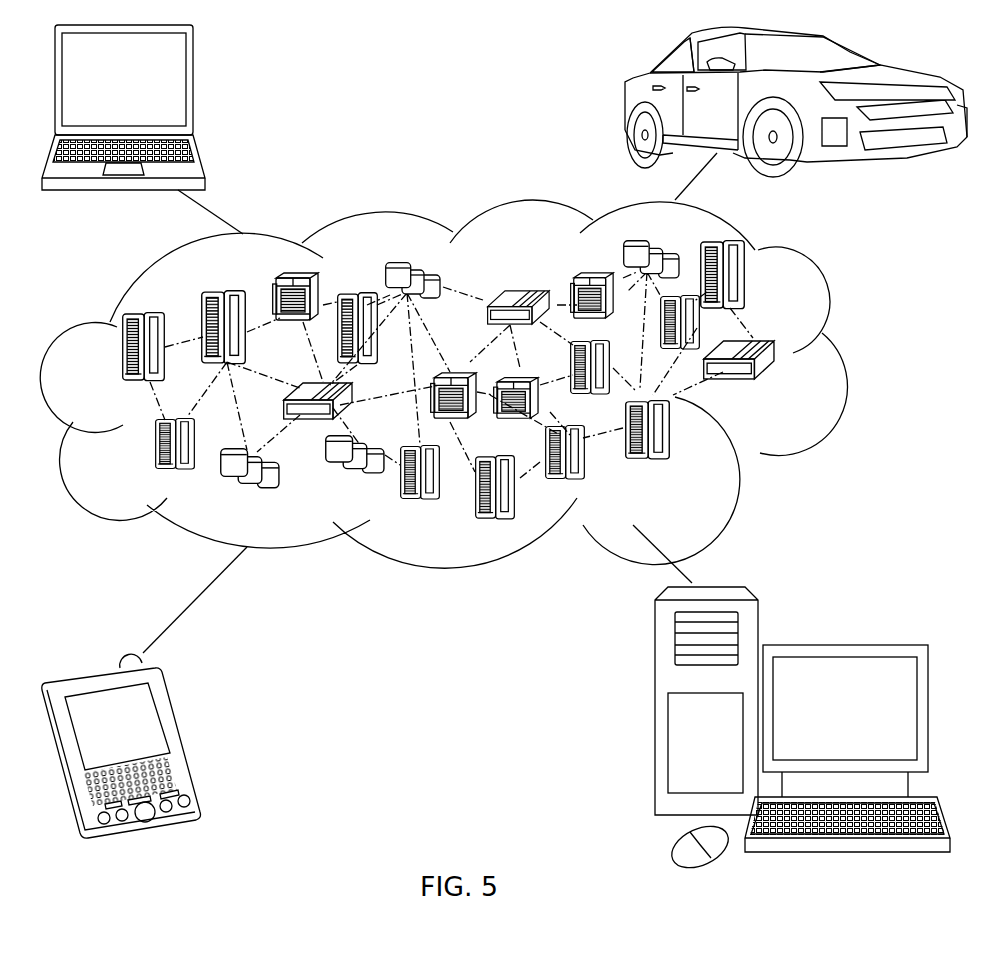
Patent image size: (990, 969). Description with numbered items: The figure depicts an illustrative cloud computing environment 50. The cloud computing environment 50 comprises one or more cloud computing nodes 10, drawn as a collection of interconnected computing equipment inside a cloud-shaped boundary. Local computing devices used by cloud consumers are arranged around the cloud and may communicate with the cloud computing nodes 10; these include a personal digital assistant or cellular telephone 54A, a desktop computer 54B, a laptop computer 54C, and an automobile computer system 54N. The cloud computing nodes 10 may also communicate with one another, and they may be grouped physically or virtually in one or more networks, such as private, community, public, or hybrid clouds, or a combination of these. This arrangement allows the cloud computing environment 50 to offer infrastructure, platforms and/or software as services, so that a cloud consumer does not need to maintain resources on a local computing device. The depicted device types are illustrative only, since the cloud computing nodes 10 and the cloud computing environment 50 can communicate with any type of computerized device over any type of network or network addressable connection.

The laptop computer 54C is at (195, 90).
The automobile computer system 54N is at (623, 103).
The personal digital assistant or cellular telephone 54A is at (182, 741).
The desktop computer 54B is at (845, 645).
The cloud computing environment 50 is at (845, 360).
The cloud computing nodes 10 is at (783, 388).